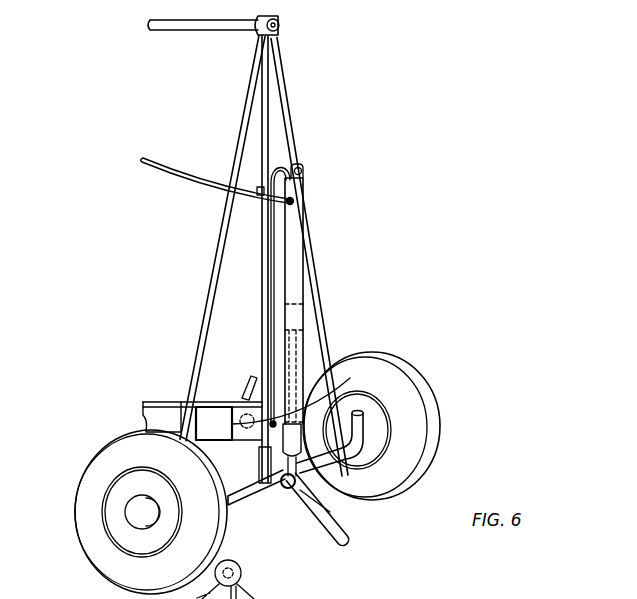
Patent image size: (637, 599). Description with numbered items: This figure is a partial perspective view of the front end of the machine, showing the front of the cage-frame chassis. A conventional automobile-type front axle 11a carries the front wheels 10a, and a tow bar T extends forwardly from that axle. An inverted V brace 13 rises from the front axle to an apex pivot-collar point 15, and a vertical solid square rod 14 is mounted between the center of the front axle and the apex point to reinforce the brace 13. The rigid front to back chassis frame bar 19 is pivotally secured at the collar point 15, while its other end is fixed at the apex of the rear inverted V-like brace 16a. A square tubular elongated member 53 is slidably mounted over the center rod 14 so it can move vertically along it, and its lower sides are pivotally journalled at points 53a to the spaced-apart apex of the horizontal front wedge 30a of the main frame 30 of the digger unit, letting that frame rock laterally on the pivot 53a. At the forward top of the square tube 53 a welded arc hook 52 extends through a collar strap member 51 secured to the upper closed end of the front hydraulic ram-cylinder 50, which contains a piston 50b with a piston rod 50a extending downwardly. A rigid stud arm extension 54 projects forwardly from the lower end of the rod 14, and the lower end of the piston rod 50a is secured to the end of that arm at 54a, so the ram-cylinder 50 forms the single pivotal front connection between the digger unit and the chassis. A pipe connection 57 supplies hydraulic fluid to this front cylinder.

The front wheels 10a is at (76, 495).
The front axle 11a is at (254, 508).
The inverted V brace 13 is at (288, 133).
The vertical solid square rod 14 is at (268, 115).
The apex pivot-collar point 15 is at (280, 24).
The rear inverted V-like brace 16a is at (292, 598).
The front to back chassis frame bar 19 is at (186, 24).
The main frame 30 is at (152, 400).
The horizontal front wedge 30a is at (190, 396).
The front hydraulic ram-cylinder 50 is at (295, 249).
The piston rod 50a is at (305, 338).
The piston 50b is at (303, 310).
The collar strap member 51 is at (291, 169).
The arc hook 52 is at (303, 189).
The square tubular elongated member 53 is at (261, 294).
The pivot points 53a is at (326, 390).
The rigid stud arm extension 54 is at (276, 490).
The piston rod connection 54a is at (330, 512).
The pipe connection 57 is at (158, 166).
The tow bar T is at (350, 540).